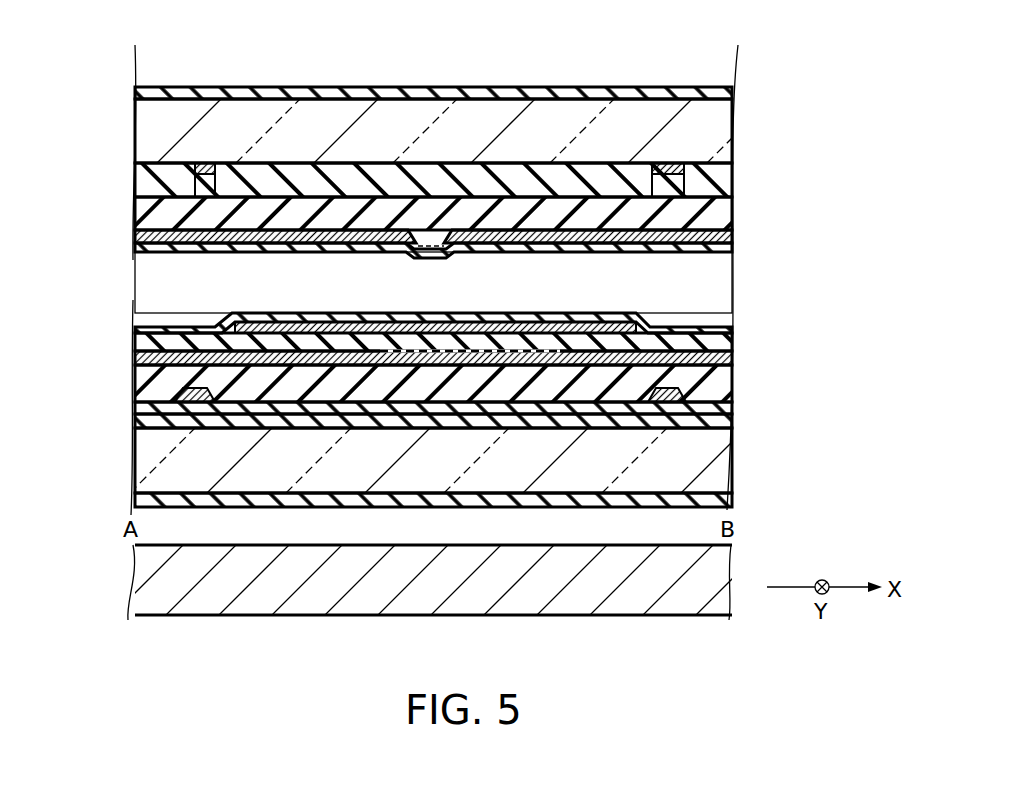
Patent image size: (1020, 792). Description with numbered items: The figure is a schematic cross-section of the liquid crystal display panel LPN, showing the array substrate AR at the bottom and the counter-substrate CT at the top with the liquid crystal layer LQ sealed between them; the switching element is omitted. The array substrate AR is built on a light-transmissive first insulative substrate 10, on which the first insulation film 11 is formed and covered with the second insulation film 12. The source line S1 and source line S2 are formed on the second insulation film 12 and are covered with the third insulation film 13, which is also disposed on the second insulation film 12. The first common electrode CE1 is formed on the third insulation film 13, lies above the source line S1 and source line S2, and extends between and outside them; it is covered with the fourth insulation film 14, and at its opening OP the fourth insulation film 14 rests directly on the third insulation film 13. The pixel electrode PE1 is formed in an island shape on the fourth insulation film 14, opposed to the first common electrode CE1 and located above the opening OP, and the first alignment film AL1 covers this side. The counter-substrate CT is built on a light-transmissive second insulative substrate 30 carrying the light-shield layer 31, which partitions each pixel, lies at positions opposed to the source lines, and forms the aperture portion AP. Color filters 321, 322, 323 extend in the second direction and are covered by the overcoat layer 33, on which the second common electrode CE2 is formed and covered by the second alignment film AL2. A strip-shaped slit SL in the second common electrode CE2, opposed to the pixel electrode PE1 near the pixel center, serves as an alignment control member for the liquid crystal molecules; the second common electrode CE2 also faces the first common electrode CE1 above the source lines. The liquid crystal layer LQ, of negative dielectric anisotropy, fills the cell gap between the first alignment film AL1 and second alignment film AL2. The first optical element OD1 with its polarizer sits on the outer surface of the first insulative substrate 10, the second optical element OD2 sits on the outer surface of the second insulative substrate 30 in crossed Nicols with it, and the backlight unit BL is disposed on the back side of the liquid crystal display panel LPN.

The liquid crystal display panel LPN is at (746, 97).
The counter-substrate CT is at (122, 133).
The array substrate AR is at (122, 461).
The second optical element OD2 is at (713, 86).
The second insulative substrate 30 is at (724, 124).
The aperture portion AP is at (647, 162).
The color filter 323 is at (726, 183).
The light-shield layer 31 is at (178, 182).
The color filter 321 is at (162, 187).
The overcoat layer 33 is at (722, 213).
The color filter 322 is at (728, 236).
The second common electrode CE2 is at (140, 233).
The slit SL is at (437, 254).
The second alignment film AL2 is at (705, 250).
The liquid crystal layer LQ is at (724, 297).
The first alignment film AL1 is at (712, 325).
The pixel electrode PE1 is at (495, 334).
The fourth insulation film 14 is at (718, 343).
The first common electrode CE1 is at (248, 366).
The opening OP is at (417, 352).
The third insulation film 13 is at (725, 383).
The source line S1 is at (192, 403).
The source line S2 is at (668, 403).
The second insulation film 12 is at (722, 407).
The first insulation film 11 is at (728, 422).
The first insulative substrate 10 is at (722, 468).
The first optical element OD1 is at (725, 500).
The backlight unit BL is at (137, 576).